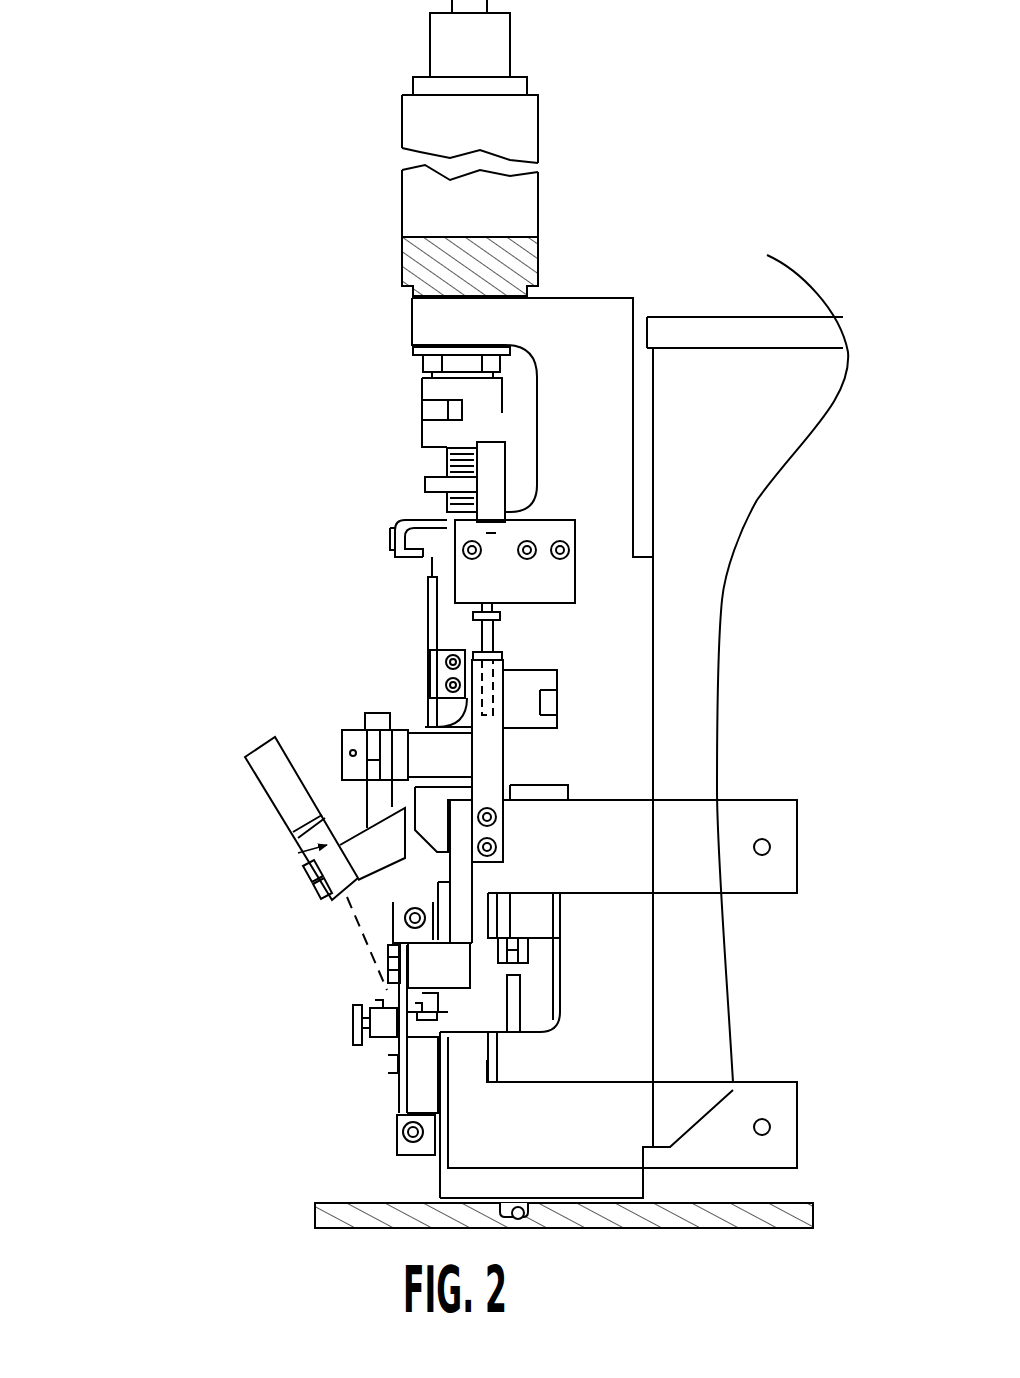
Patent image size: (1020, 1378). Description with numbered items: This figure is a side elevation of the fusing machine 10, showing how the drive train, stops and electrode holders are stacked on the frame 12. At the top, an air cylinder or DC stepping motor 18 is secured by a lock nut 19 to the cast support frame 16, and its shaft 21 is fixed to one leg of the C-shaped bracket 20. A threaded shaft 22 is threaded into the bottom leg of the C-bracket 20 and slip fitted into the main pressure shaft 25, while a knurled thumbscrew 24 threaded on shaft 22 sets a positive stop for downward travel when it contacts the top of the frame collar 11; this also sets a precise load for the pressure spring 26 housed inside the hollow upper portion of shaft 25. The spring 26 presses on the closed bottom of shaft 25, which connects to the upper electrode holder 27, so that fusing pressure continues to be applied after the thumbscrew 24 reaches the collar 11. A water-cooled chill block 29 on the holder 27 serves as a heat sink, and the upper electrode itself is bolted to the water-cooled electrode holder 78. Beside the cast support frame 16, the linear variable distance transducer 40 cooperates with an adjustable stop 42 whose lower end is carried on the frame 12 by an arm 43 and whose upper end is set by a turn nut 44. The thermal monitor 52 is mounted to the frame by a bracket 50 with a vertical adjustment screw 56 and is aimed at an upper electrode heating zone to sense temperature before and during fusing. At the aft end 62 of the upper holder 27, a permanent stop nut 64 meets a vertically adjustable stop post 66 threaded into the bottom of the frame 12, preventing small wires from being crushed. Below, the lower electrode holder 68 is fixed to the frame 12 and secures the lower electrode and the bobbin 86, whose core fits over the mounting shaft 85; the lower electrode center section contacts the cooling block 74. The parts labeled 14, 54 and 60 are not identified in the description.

The fusing machine 10 is at (167, 470).
The frame collar 11 is at (402, 518).
The frame 12 is at (632, 668).
The frame 14 is at (722, 392).
The cast support frame 16 is at (528, 315).
The air cylinder or DC stepping motor 18 is at (418, 200).
The lock nut 19 is at (417, 363).
The C-shaped bracket 20 is at (420, 385).
The shaft 21 is at (446, 408).
The threaded shaft 22 is at (446, 462).
The knurled thumbscrew 24 is at (424, 483).
The main pressure shaft 25 is at (437, 620).
The pressure spring 26 is at (427, 678).
The upper electrode holder 27 is at (430, 808).
The water-cooled chill block 29 is at (392, 917).
The linear variable distance transducer 40 is at (562, 580).
The adjustable stop 42 is at (494, 635).
The arm 43 is at (493, 750).
The turn nut 44 is at (500, 612).
The bracket 50 is at (350, 742).
The thermal monitor 52 is at (325, 846).
The stop 54 is at (385, 950).
The vertical adjustment screw 56 is at (377, 710).
The mounting plate 60 is at (603, 842).
The aft end of upper electrode holder 62 is at (538, 923).
The stop nut 64 is at (513, 957).
The stop post 66 is at (515, 1005).
The lower electrode holder 68 is at (410, 1093).
The cooling block 74 is at (397, 1140).
The water-cooled electrode holder 78 is at (448, 975).
The mounting shaft 85 is at (382, 1028).
The bobbin 86 is at (350, 1028).